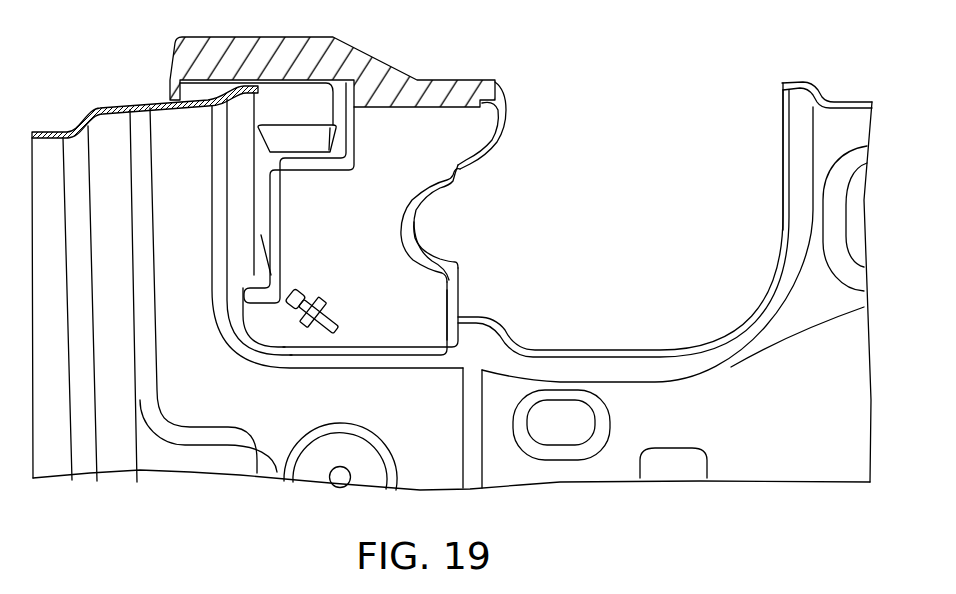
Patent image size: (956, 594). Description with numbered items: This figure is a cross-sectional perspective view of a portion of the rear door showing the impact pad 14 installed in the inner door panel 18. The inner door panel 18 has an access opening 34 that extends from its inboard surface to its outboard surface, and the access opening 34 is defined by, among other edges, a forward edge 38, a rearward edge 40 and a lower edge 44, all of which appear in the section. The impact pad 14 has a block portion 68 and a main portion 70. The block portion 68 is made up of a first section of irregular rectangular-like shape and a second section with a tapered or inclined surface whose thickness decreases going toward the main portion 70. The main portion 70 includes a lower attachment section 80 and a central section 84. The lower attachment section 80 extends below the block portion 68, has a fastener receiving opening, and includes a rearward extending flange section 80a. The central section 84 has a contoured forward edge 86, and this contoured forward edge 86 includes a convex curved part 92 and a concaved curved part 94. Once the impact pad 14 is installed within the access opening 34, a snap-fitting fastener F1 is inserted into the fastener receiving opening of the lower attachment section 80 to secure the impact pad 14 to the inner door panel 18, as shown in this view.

The impact pad 14 is at (470, 272).
The inner door panel 18 is at (846, 90).
The access opening 34 is at (782, 110).
The forward edge 38 is at (785, 157).
The rearward edge 40 is at (258, 108).
The lower edge 44 is at (592, 356).
The block portion 68 is at (292, 138).
The main portion 70 is at (315, 223).
The lower attachment section 80 is at (393, 323).
The rearward extending flange section 80a is at (272, 323).
The central section 84 is at (310, 196).
The contoured forward edge 86 is at (502, 137).
The convex curved part 92 is at (506, 112).
The concaved curved part 94 is at (428, 222).
The snap-fitting fastener F1 is at (326, 305).